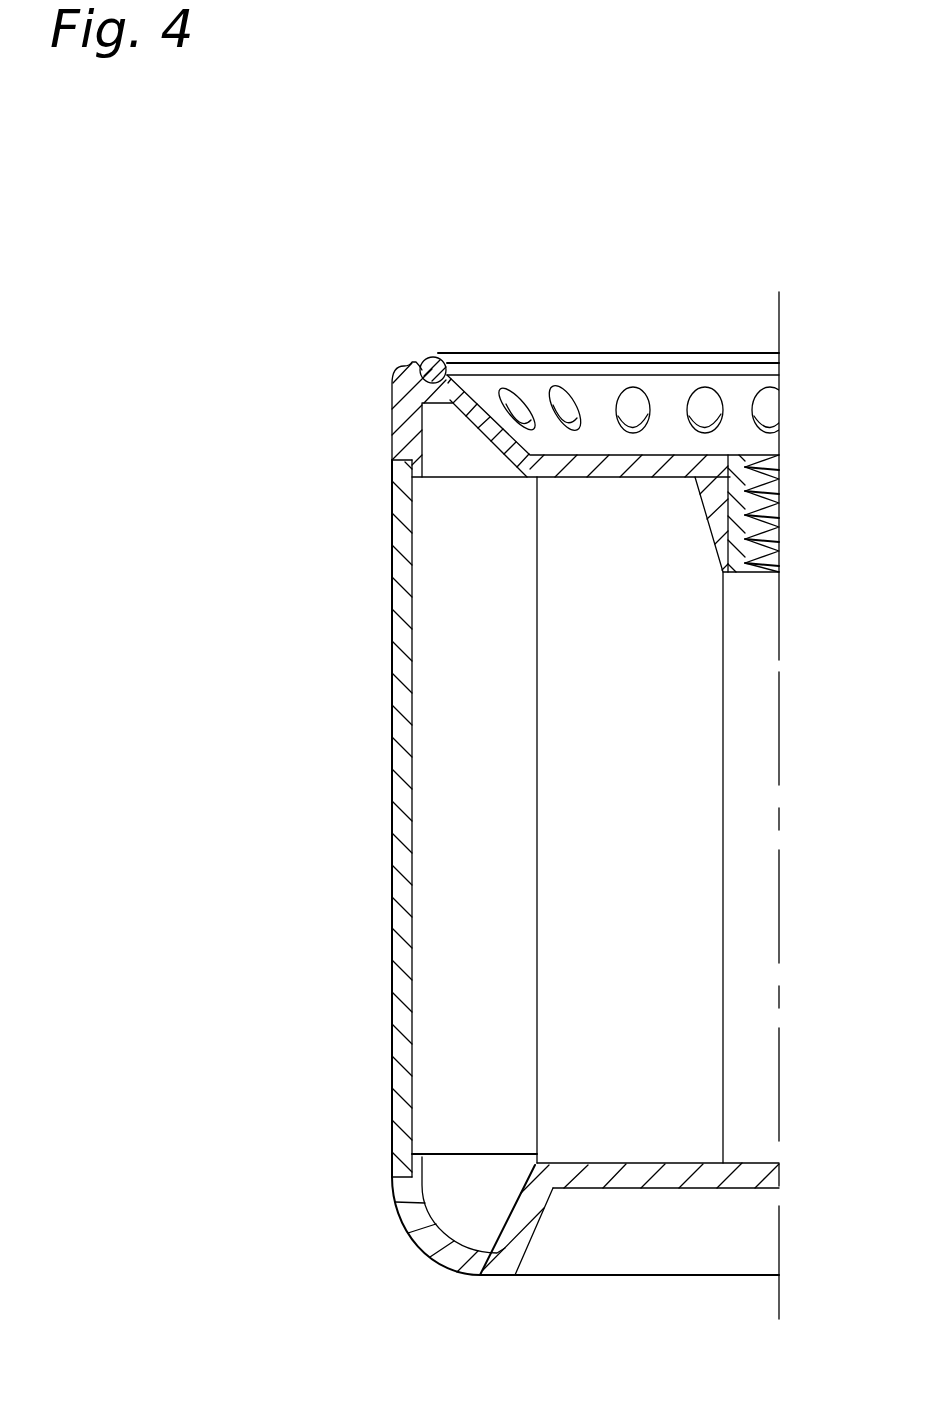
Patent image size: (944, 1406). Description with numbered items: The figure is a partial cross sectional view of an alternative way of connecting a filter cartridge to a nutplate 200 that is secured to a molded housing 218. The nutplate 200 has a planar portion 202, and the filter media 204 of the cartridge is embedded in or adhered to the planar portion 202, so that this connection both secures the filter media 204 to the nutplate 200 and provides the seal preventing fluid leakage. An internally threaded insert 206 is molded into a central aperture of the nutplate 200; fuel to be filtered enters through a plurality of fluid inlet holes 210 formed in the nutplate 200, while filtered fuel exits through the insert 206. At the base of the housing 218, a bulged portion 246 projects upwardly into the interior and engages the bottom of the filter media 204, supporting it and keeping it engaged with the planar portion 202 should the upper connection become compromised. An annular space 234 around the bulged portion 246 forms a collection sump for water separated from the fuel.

The nutplate 200 is at (620, 337).
The planar portion 202 is at (659, 453).
The filter media 204 is at (563, 602).
The internally threaded insert 206 is at (737, 574).
The fluid inlet holes 210 is at (555, 392).
The housing 218 is at (395, 697).
The annular space 234 is at (452, 1198).
The bulged portion 246 is at (677, 1190).